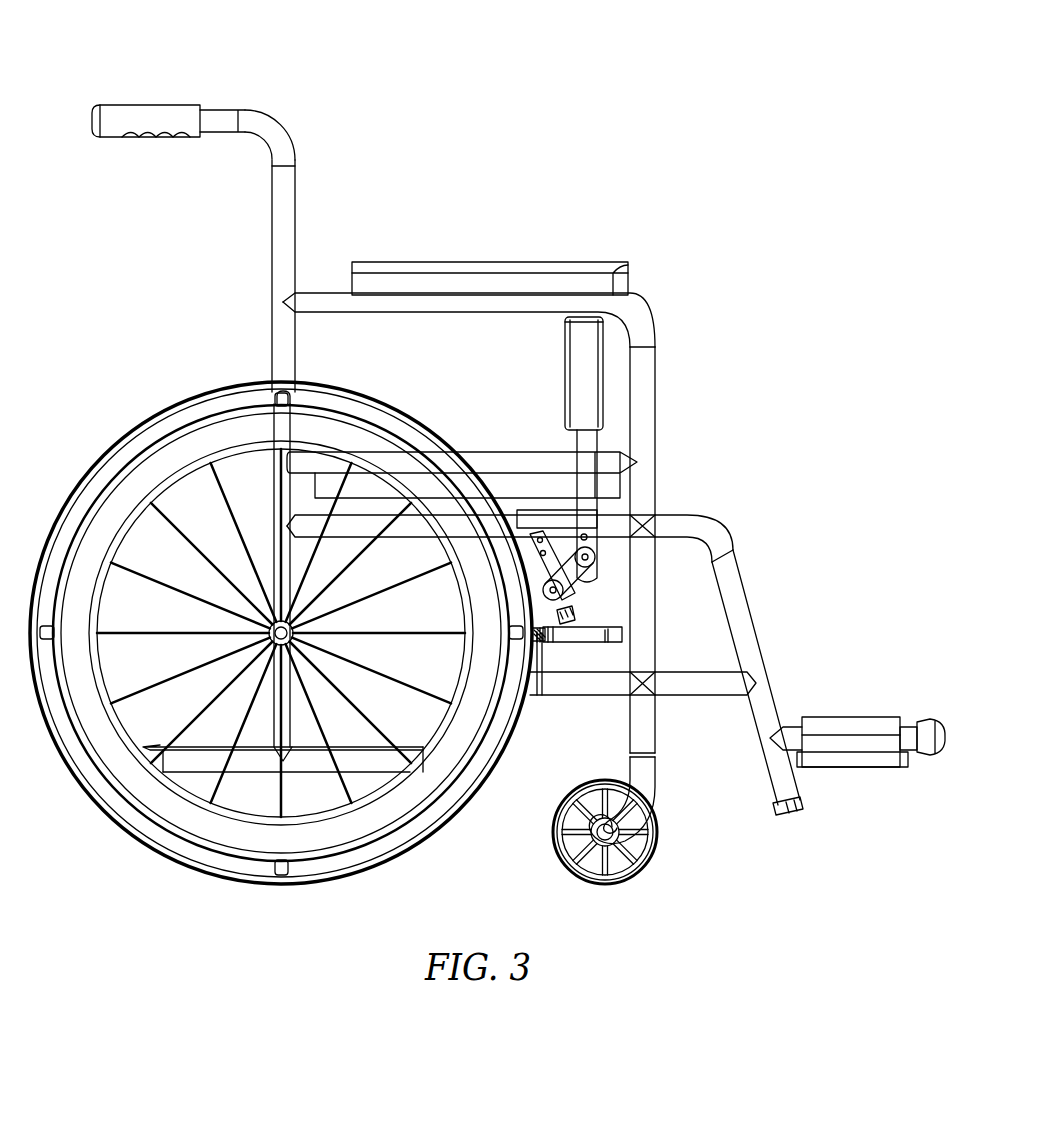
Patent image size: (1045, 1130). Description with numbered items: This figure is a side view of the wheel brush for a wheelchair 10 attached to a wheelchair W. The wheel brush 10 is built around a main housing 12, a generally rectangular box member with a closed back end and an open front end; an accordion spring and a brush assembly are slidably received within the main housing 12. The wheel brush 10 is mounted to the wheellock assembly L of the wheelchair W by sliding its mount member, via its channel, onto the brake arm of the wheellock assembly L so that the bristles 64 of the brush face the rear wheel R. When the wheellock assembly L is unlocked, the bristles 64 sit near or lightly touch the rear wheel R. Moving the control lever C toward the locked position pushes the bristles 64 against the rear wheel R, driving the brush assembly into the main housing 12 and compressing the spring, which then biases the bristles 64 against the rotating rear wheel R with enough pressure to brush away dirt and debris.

The wheelchair W is at (285, 115).
The rear wheel R is at (193, 395).
The control lever C is at (575, 604).
The wheellock assembly L is at (633, 624).
The main housing 12 is at (619, 633).
The wheel brush for a wheelchair 10 is at (597, 643).
The bristles 64 is at (542, 644).